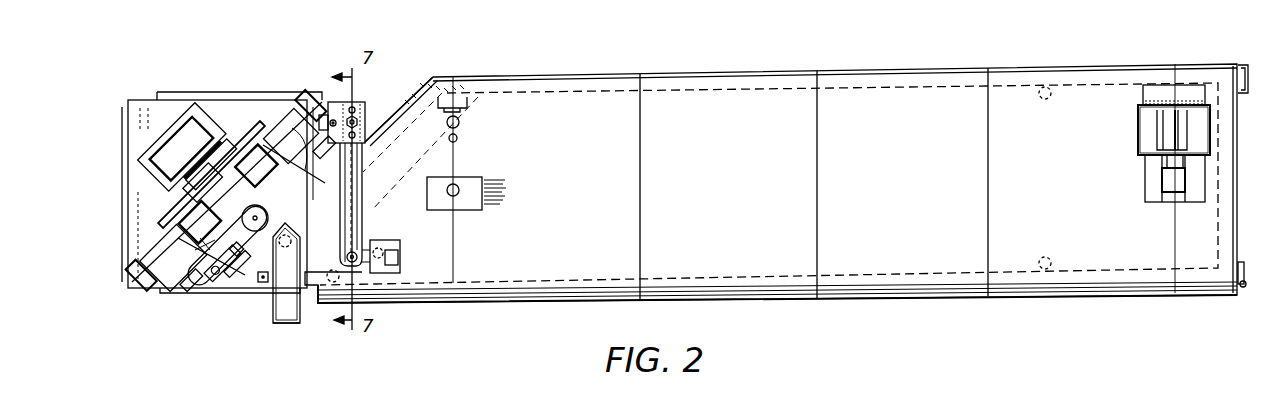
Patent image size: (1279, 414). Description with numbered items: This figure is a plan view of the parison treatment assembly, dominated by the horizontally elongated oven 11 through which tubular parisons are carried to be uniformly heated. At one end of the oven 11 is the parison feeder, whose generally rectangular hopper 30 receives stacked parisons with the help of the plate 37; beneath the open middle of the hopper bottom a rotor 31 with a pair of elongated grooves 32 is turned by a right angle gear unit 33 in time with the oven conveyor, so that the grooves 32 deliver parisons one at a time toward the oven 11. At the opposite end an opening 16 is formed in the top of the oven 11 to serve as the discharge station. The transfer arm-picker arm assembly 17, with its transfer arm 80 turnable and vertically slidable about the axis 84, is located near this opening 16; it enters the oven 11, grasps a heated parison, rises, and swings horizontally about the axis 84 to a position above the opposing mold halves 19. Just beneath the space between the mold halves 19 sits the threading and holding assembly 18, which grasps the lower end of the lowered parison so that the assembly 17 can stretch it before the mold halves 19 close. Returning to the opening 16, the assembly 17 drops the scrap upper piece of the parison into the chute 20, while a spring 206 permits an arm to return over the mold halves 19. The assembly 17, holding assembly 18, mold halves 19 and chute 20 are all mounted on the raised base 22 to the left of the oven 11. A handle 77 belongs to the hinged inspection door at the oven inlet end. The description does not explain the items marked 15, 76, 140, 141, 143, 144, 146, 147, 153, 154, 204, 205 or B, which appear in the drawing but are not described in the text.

The oven 11 is at (916, 186).
The switch 15 is at (401, 256).
The opening 16 is at (318, 300).
The transfer arm-picker arm assembly 17 is at (368, 182).
The threading and holding assembly 18 is at (262, 262).
The mold halves 19 is at (246, 297).
The chute 20 is at (287, 326).
The raised base 22 is at (405, 98).
The hopper 30 is at (1138, 152).
The rotor 31 is at (1157, 135).
The grooves 32 is at (1182, 130).
The right angle gear unit 33 is at (1170, 194).
The plate 37 is at (1148, 118).
The latch 76 is at (1248, 288).
The handle 77 is at (1245, 65).
The transfer arm 80 is at (427, 196).
The axis 84 is at (356, 118).
The end block 140 is at (140, 287).
The slide block 141 is at (228, 193).
The frame plate 143 is at (258, 100).
The shaft 144 is at (250, 128).
The carriage 146 is at (212, 148).
The cutter block 147 is at (188, 160).
The bearing block 153 is at (165, 185).
The clamp 154 is at (232, 200).
The link 204 is at (205, 290).
The pin 205 is at (255, 278).
The spring 206 is at (228, 272).
The pivot B is at (232, 210).